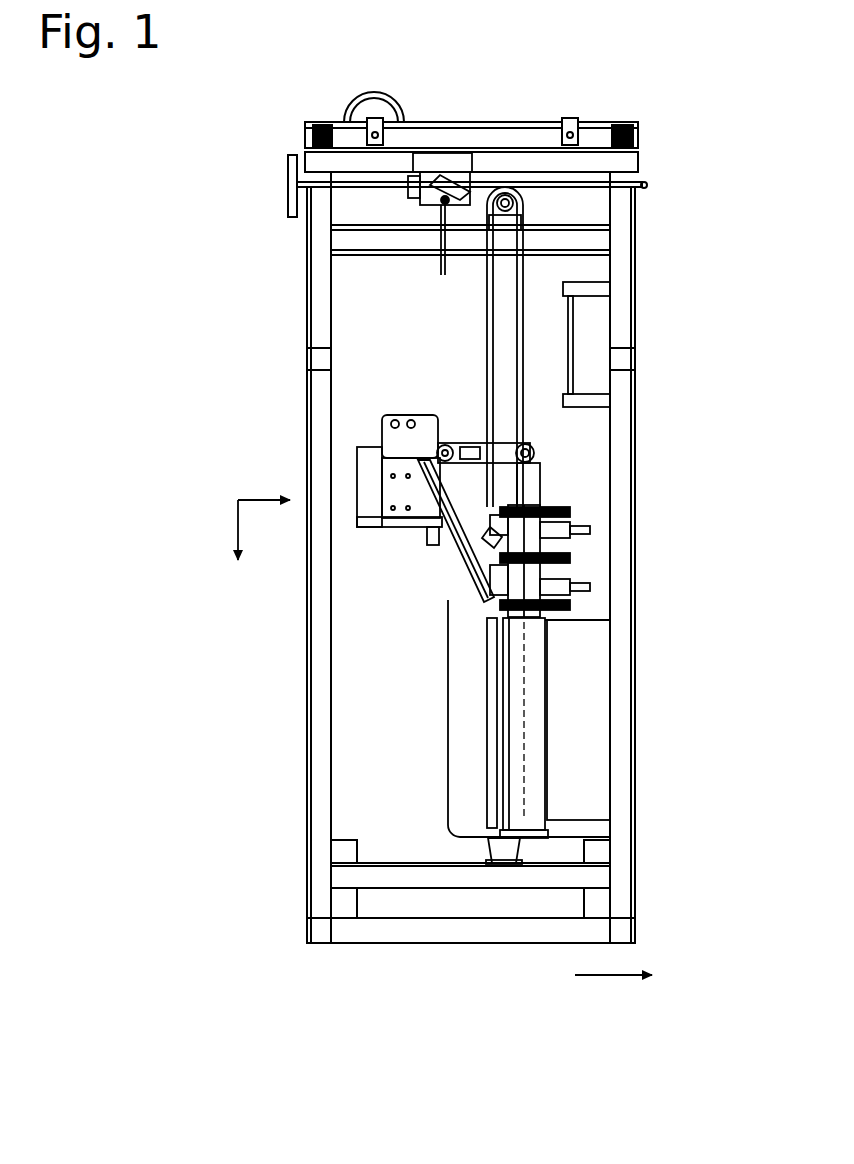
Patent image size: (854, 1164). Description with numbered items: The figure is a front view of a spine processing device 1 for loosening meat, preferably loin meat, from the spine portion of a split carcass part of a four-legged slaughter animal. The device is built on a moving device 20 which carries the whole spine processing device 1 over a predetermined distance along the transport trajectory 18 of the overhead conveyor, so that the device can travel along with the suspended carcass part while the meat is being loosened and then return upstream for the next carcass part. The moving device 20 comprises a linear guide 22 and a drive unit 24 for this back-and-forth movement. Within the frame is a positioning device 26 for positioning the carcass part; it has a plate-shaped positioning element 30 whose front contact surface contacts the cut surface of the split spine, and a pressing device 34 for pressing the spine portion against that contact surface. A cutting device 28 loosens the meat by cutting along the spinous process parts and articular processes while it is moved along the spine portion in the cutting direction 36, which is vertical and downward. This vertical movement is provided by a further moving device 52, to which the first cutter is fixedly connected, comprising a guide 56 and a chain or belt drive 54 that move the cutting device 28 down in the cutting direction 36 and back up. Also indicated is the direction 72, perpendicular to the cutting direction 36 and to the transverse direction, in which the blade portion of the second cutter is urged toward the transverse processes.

The spine processing device 1 is at (596, 493).
The transport trajectory 18 is at (605, 975).
The moving device 20 is at (277, 217).
The linear guide 22 is at (598, 191).
The drive unit 24 is at (437, 168).
The positioning device 26 is at (564, 640).
The cutting device 28 is at (441, 548).
The positioning element 30 is at (470, 616).
The pressing device 34 is at (520, 634).
The cutting direction 36 is at (238, 527).
The moving device 52 is at (469, 420).
The chain or belt drive 54 is at (492, 336).
The guide 56 is at (526, 463).
The direction 72 is at (262, 500).